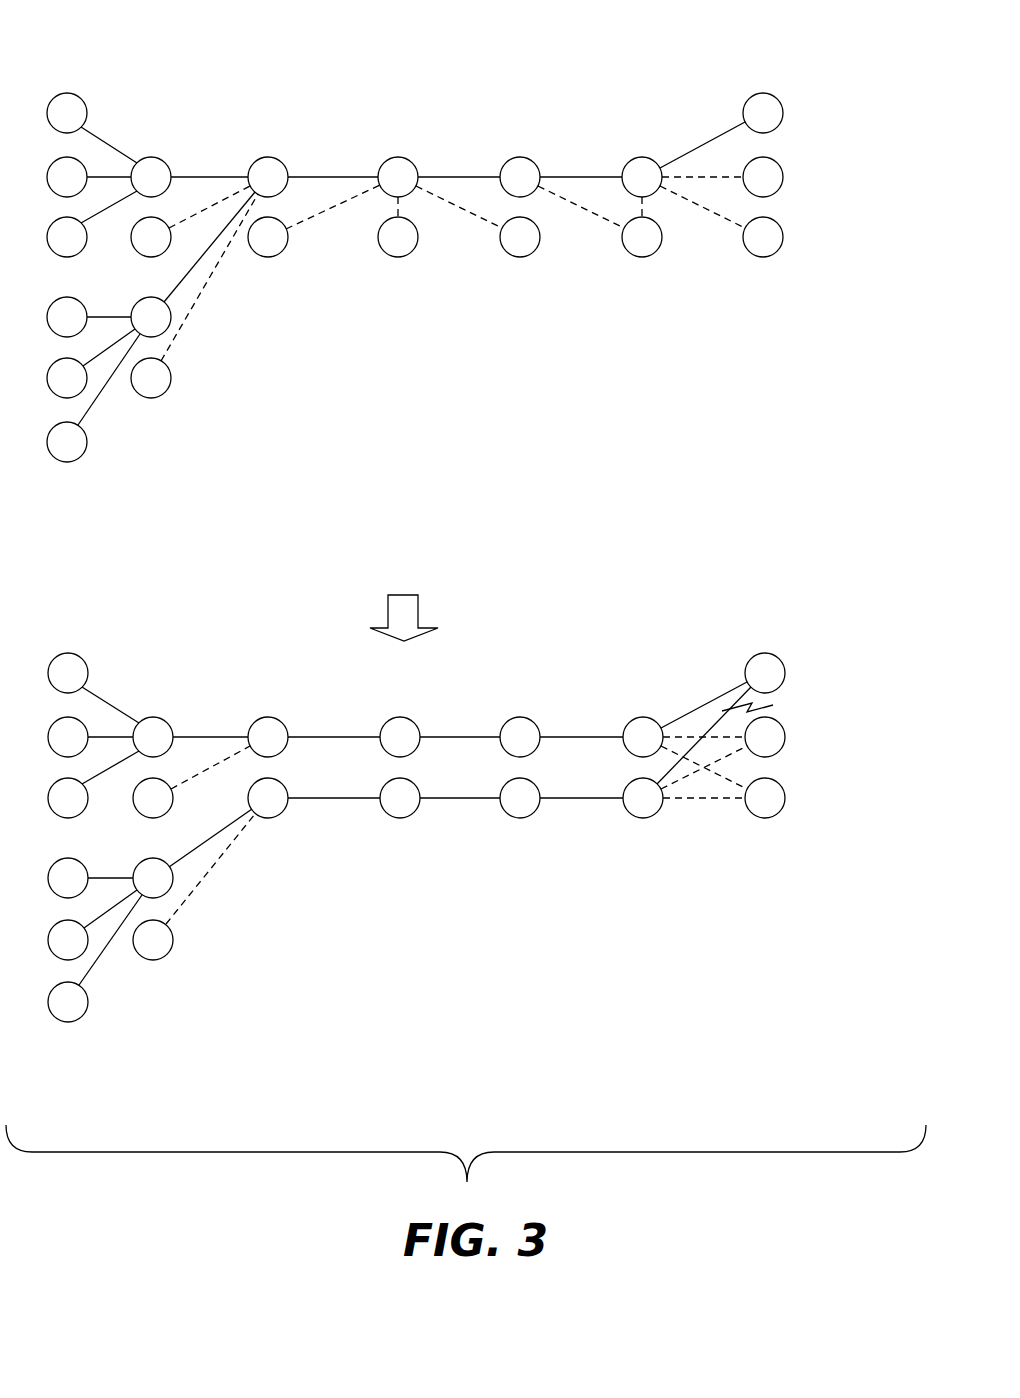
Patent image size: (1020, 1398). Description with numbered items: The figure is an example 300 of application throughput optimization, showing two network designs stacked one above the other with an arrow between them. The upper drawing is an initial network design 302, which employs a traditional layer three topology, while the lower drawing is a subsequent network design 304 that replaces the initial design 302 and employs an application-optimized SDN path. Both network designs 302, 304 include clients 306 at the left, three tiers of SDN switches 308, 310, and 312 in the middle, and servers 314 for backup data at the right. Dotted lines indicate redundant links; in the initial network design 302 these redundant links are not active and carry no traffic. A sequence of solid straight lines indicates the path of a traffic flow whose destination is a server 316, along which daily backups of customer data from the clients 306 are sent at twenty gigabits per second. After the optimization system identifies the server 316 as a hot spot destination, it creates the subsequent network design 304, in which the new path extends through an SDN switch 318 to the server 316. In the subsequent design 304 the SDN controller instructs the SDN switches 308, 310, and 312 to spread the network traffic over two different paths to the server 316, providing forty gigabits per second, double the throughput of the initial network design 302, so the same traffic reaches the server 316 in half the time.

The example 300 is at (465, 44).
The initial network design 302 is at (828, 65).
The subsequent network design 304 is at (828, 637).
The clients 306 is at (97, 483).
The SDN switches 308 is at (180, 483).
The SDN switches 310 is at (548, 483).
The SDN switches 312 is at (672, 483).
The servers for backup data 314 is at (790, 483).
The server 316 is at (779, 357).
The SDN switch 318 is at (307, 820).